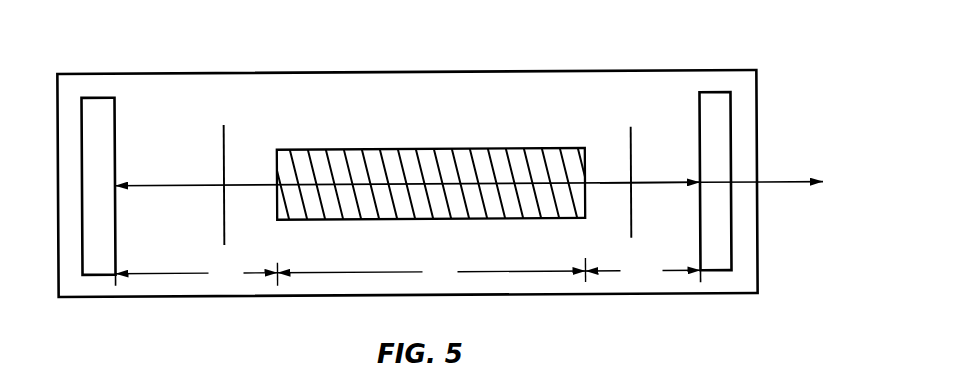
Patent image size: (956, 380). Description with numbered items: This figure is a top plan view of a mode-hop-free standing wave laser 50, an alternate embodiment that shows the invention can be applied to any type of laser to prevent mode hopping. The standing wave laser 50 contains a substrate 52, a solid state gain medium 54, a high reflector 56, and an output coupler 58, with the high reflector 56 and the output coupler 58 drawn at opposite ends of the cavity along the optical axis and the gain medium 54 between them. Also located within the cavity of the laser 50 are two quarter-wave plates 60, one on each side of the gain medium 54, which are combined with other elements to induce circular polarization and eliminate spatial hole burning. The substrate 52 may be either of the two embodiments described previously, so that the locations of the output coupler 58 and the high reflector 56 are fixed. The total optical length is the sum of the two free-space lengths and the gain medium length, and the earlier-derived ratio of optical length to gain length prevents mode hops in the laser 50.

The standing wave laser 50 is at (655, 62).
The substrate 52 is at (632, 295).
The solid state gain medium 54 is at (345, 149).
The high reflector 56 is at (115, 130).
The output coupler 58 is at (700, 118).
The quarter-wave plates 60 is at (224, 150).